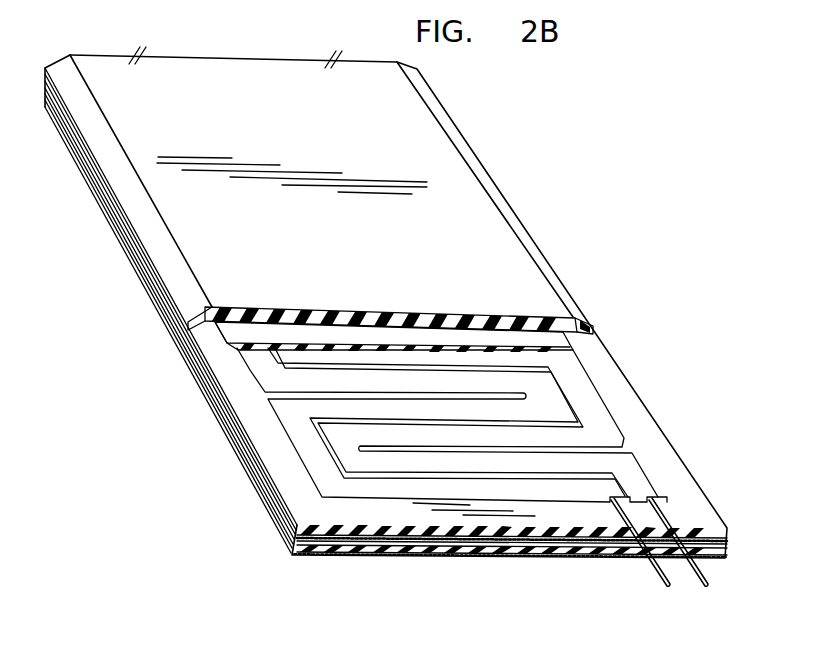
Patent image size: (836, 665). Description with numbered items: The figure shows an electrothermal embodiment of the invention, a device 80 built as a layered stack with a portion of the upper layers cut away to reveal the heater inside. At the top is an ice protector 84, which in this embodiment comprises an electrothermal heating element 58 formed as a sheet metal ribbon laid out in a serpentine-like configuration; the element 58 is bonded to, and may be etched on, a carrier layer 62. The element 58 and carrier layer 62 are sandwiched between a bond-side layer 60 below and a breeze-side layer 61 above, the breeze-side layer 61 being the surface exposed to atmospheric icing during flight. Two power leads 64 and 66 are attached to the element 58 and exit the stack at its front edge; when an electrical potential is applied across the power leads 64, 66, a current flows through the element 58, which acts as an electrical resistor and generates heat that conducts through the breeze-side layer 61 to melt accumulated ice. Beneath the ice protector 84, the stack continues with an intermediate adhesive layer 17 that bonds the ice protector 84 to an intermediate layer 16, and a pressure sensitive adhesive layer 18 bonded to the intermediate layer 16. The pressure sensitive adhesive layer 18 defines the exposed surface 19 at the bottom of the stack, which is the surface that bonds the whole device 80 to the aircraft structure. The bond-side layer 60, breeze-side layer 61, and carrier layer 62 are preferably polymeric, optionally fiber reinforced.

The device 80 is at (505, 162).
The ice protector 84 is at (474, 230).
The carrier layer 62 is at (515, 333).
The breeze-side layer 61 is at (557, 322).
The electrothermal heating element 58 is at (585, 400).
The bond-side layer 60 is at (353, 530).
The intermediate adhesive layer 17 is at (441, 545).
The intermediate layer 16 is at (490, 548).
The pressure sensitive adhesive layer 18 is at (541, 552).
The exposed surface 19 is at (585, 555).
The power lead 66 is at (665, 590).
The power lead 64 is at (707, 578).